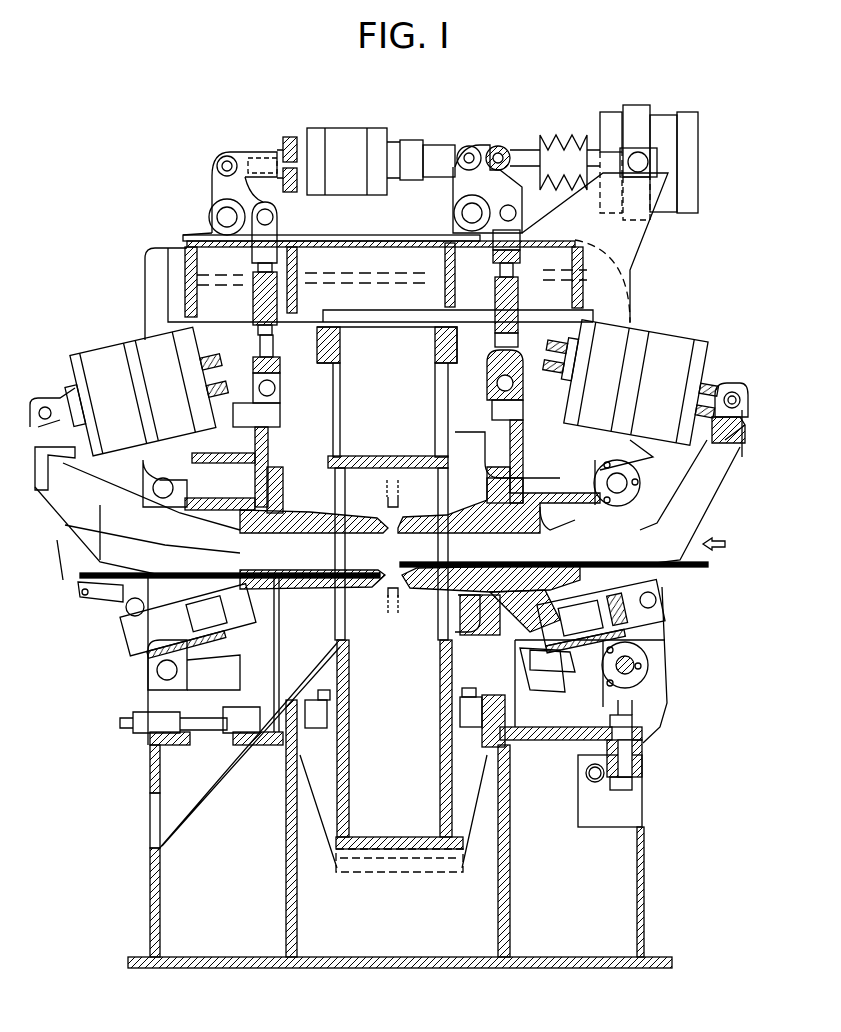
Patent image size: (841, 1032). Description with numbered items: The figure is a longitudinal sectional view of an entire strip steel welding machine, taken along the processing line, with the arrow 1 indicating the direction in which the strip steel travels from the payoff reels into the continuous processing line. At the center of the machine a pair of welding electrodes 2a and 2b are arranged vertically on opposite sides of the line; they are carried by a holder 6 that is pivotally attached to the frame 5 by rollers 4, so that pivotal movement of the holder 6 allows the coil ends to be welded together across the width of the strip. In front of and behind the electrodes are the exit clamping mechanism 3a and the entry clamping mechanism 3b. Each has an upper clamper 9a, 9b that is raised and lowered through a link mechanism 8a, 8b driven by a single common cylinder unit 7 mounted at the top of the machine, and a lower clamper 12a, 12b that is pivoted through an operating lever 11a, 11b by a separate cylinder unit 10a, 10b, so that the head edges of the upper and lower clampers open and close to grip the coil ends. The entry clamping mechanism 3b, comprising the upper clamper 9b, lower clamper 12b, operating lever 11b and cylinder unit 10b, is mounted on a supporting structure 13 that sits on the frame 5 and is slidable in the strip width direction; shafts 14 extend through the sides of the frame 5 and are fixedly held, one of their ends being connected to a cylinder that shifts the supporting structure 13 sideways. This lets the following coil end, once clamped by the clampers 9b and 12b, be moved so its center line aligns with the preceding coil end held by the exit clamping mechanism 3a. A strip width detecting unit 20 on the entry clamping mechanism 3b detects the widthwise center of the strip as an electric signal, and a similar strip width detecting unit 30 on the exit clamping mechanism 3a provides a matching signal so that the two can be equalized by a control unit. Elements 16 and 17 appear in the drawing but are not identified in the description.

The arrow 1 is at (725, 543).
The welding electrode 2a is at (397, 503).
The welding electrode 2b is at (400, 607).
The exit clamping mechanism 3a is at (310, 510).
The entry clamping mechanism 3b is at (492, 590).
The rollers 4 is at (473, 738).
The frame 5 is at (300, 867).
The holder 6 is at (343, 792).
The common cylinder unit 7 is at (657, 203).
The link mechanism 8a is at (253, 235).
The link mechanism 8b is at (453, 200).
The upper clamper 9a is at (350, 513).
The upper clamper 9b is at (428, 532).
The cylinder unit 10a is at (103, 362).
The cylinder unit 10b is at (660, 343).
The operating lever 11a is at (100, 505).
The operating lever 11b is at (712, 500).
The lower clamper 12a is at (352, 590).
The lower clamper 12b is at (428, 590).
The supporting structure 13 is at (530, 672).
The shafts 14 is at (630, 658).
The mounting box 16 is at (608, 792).
The fastening bolt 17 is at (623, 752).
The strip width detecting unit 20 is at (657, 607).
The strip width detecting unit 30 is at (157, 618).